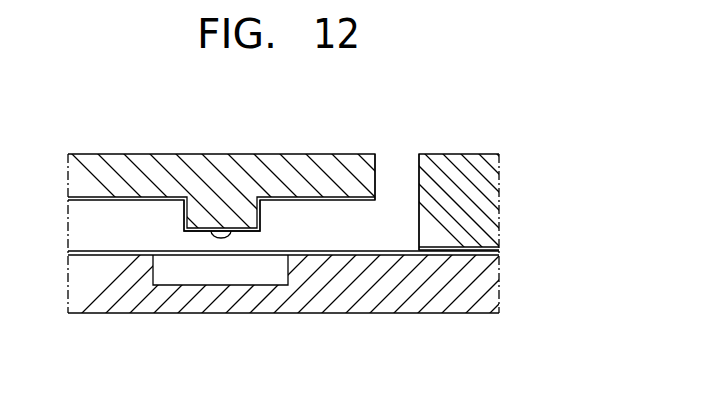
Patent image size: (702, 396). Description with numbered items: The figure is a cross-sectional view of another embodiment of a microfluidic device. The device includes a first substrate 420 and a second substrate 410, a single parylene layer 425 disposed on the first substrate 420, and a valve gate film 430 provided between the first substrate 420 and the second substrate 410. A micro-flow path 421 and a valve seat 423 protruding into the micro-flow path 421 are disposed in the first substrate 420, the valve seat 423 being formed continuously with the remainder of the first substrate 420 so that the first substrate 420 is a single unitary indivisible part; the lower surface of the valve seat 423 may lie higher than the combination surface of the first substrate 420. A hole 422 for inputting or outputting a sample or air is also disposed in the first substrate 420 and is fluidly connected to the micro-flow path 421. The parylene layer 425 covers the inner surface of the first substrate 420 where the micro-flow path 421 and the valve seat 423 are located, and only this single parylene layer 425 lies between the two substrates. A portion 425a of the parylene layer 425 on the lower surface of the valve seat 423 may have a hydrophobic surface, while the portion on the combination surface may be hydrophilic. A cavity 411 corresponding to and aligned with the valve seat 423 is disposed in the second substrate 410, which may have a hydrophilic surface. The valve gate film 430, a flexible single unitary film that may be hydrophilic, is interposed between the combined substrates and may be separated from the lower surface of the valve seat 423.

The second substrate 410 is at (495, 299).
The cavity 411 is at (220, 277).
The first substrate 420 is at (281, 166).
The micro-flow path 421 is at (120, 214).
The hole 422 is at (399, 172).
The valve seat 423 is at (192, 216).
The parylene layer 425 is at (482, 245).
The portion of the parylene layer 425a is at (222, 235).
The valve gate film 430 is at (493, 255).